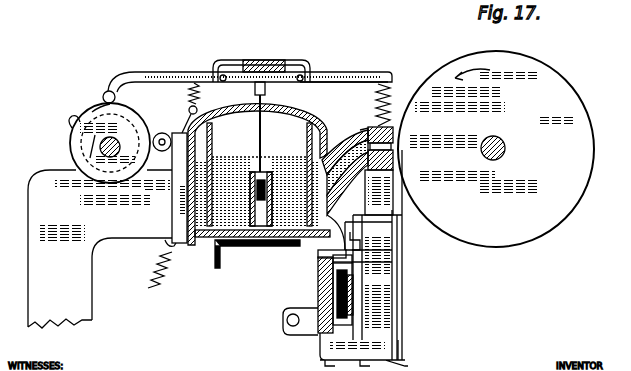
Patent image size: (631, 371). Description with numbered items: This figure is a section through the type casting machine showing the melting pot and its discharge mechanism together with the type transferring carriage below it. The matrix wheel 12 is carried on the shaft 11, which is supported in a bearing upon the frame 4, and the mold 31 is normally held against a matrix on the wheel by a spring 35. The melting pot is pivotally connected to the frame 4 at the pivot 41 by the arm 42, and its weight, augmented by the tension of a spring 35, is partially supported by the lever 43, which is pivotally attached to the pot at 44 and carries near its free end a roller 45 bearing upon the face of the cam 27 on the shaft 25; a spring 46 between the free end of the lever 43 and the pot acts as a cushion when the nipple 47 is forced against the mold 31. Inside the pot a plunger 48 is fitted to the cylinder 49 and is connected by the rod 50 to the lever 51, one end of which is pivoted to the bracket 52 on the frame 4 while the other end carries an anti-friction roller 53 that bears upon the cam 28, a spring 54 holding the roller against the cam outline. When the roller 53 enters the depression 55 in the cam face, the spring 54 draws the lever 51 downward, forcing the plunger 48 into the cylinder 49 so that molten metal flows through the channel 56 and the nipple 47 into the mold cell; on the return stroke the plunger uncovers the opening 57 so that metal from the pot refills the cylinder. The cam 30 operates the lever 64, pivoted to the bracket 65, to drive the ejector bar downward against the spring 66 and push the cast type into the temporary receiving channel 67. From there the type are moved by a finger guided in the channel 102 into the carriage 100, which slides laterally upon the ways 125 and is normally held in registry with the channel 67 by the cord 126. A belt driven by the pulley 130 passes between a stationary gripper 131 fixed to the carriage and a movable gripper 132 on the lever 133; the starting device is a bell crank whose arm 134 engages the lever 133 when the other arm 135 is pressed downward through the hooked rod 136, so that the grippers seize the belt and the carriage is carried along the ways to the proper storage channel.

The frame 4 is at (100, 249).
The shaft 11 is at (505, 148).
The matrix wheel 12 is at (496, 149).
The shaft 25 is at (100, 157).
The cam 27 is at (125, 122).
The cam 28 is at (82, 146).
The cam 30 is at (70, 120).
The mold 31 is at (395, 138).
The spring 35 is at (173, 266).
The pivot 41 is at (287, 320).
The arm 42 is at (300, 307).
The lever 43 is at (172, 218).
The pivot 44 is at (168, 243).
The roller 45 is at (161, 133).
The spring 46 is at (183, 118).
The nipple 47 is at (366, 130).
The plunger 48 is at (268, 170).
The cylinder 49 is at (252, 190).
The rod 50 is at (260, 150).
The lever 51 is at (165, 73).
The bracket 52 is at (314, 67).
The anti-friction roller 53 is at (104, 91).
The spring 54 is at (190, 90).
The depression 55 is at (100, 110).
The channel 56 is at (318, 180).
The opening 57 is at (272, 182).
The lever 64 is at (340, 80).
The bracket 65 is at (228, 60).
The spring 66 is at (374, 107).
The temporary receiving channel 67 is at (379, 192).
The carriage 100 is at (358, 318).
The channel 102 is at (398, 272).
The ways 125 is at (338, 318).
The cord 126 is at (348, 300).
The pulley 130 is at (340, 318).
The stationary gripper 131 is at (345, 288).
The movable gripper 132 is at (352, 263).
The lever 133 is at (355, 249).
The arm 134 is at (360, 212).
The arm 135 is at (405, 212).
The hooked rod 136 is at (405, 232).